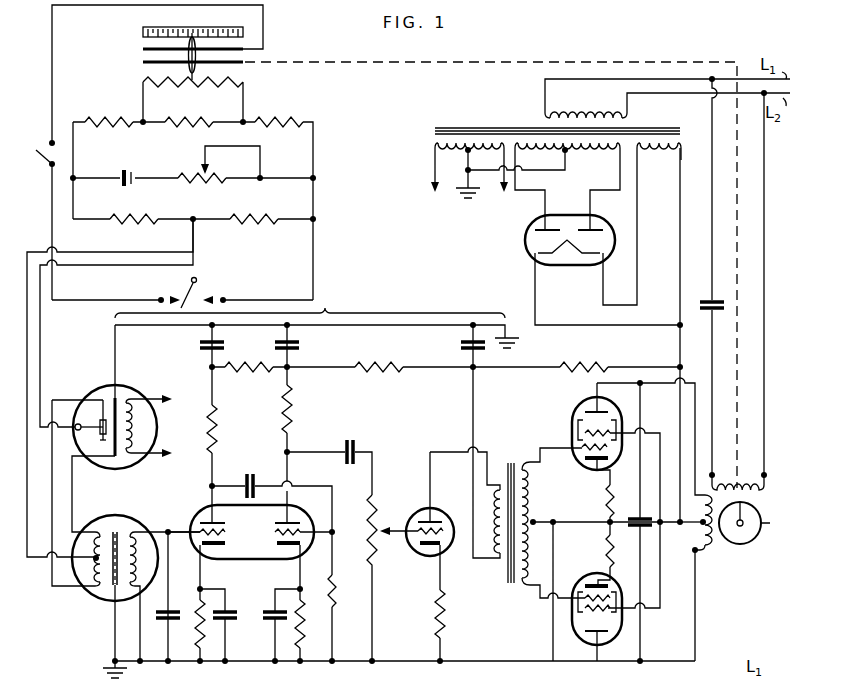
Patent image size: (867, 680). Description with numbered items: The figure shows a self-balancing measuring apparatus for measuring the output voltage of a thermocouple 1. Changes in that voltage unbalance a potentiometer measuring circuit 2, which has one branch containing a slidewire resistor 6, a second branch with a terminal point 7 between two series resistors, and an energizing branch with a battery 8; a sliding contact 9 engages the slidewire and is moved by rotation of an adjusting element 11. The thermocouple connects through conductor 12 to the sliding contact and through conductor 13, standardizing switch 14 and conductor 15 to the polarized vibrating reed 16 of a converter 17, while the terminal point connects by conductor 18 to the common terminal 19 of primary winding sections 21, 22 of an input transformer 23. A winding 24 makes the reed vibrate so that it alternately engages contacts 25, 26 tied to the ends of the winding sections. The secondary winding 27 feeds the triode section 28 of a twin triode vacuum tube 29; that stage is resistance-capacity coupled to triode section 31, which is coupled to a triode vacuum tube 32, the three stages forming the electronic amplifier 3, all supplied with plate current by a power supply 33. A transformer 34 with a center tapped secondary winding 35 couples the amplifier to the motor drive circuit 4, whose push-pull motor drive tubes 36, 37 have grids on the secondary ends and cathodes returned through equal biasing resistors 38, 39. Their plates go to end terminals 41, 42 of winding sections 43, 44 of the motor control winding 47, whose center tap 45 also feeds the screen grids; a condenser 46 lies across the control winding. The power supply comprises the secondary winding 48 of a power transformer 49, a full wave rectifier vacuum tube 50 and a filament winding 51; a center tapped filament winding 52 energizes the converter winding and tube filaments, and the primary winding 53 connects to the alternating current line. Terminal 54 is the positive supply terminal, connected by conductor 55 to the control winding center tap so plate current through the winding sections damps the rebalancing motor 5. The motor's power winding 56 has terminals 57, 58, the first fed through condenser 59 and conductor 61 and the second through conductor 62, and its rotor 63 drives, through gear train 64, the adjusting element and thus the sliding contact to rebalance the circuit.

The thermocouple 1 is at (34, 148).
The potentiometer measuring circuit 2 is at (328, 135).
The electronic amplifier 3 is at (317, 318).
The motor drive circuit 4 is at (541, 419).
The rebalancing motor 5 is at (756, 556).
The slidewire resistor 6 is at (192, 82).
The terminal point 7 is at (193, 219).
The battery 8 is at (124, 170).
The sliding contact 9 is at (188, 34).
The adjusting element 11 is at (143, 62).
The conductor 12 is at (52, 79).
The conductor 13 is at (52, 210).
The standardizing switch 14 is at (198, 294).
The conductor 15 is at (40, 343).
The polarized vibrating reed 16 is at (86, 398).
The converter 17 is at (132, 386).
The conductor 18 is at (115, 252).
The common terminal 19 is at (94, 562).
The primary winding section 21 is at (98, 536).
The primary winding section 22 is at (96, 586).
The input transformer 23 is at (137, 520).
The winding 24 is at (134, 428).
The contact 25 is at (102, 420).
The contact 26 is at (104, 438).
The secondary winding 27 is at (134, 577).
The triode section 28 is at (174, 596).
The twin triode vacuum tube 29 is at (201, 510).
The triode section 31 is at (308, 545).
The triode vacuum tube 32 is at (422, 512).
The power supply 33 is at (502, 230).
The transformer 34 is at (508, 578).
The center tapped secondary winding 35 is at (535, 520).
The motor drive tube 36 is at (574, 404).
The motor drive tube 37 is at (588, 644).
The biasing resistor 38 is at (606, 500).
The biasing resistor 39 is at (606, 546).
The end terminal 41 is at (695, 492).
The end terminal 42 is at (697, 552).
The winding section 43 is at (695, 578).
The winding section 44 is at (710, 544).
The center tap 45 is at (700, 524).
The condenser 46 is at (626, 522).
The motor control winding 47 is at (698, 538).
The secondary winding 48 is at (604, 148).
The power transformer 49 is at (470, 126).
The full wave rectifier vacuum tube 50 is at (526, 246).
The filament winding 51 is at (666, 150).
The center tapped filament winding 52 is at (498, 170).
The primary winding 53 is at (596, 116).
The terminal 54 is at (680, 325).
The conductor 55 is at (680, 409).
The power winding 56 is at (762, 488).
The terminal 57 is at (730, 477).
The terminal 58 is at (766, 474).
The condenser 59 is at (696, 304).
The conductor 61 is at (712, 191).
The conductor 62 is at (764, 191).
The rotor 63 is at (756, 523).
The gear train 64 is at (558, 62).